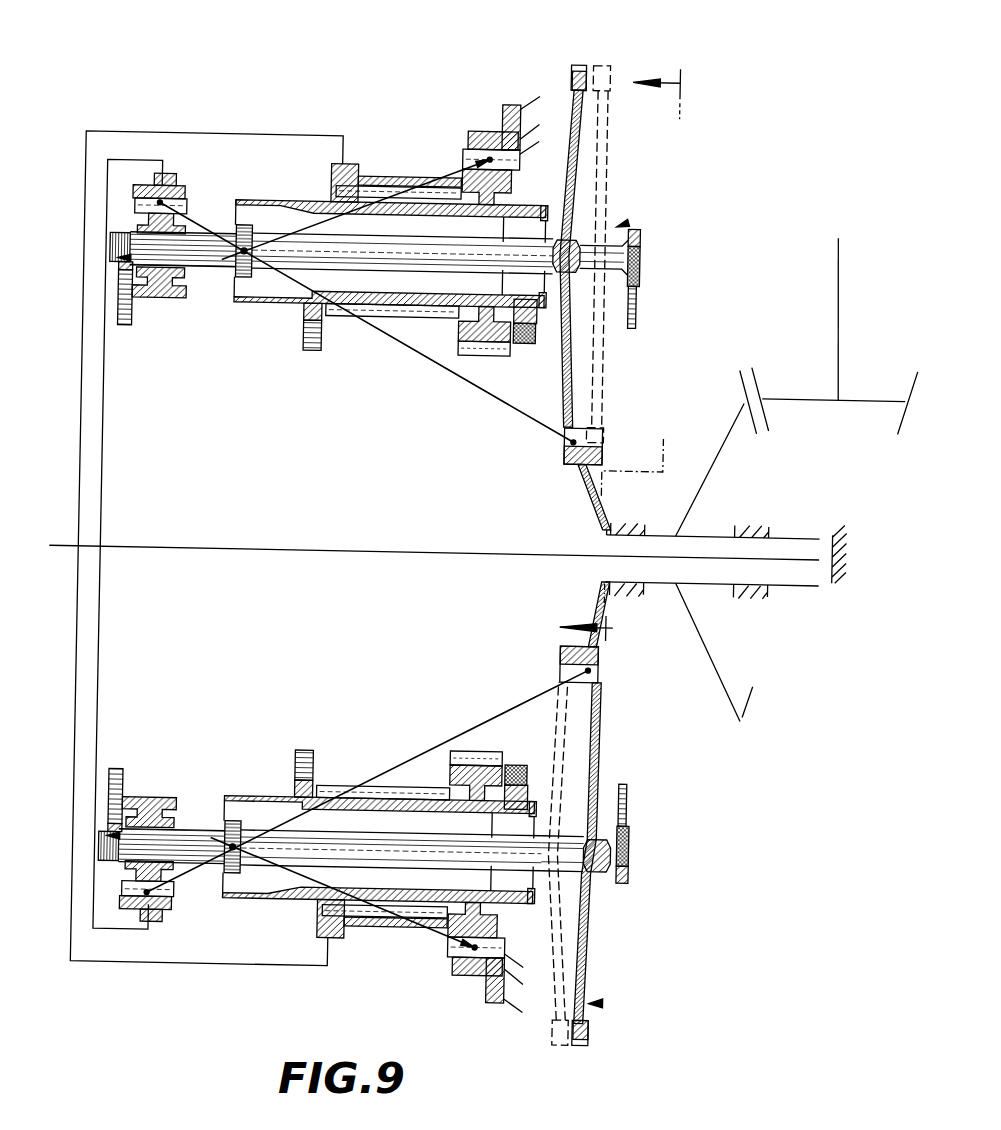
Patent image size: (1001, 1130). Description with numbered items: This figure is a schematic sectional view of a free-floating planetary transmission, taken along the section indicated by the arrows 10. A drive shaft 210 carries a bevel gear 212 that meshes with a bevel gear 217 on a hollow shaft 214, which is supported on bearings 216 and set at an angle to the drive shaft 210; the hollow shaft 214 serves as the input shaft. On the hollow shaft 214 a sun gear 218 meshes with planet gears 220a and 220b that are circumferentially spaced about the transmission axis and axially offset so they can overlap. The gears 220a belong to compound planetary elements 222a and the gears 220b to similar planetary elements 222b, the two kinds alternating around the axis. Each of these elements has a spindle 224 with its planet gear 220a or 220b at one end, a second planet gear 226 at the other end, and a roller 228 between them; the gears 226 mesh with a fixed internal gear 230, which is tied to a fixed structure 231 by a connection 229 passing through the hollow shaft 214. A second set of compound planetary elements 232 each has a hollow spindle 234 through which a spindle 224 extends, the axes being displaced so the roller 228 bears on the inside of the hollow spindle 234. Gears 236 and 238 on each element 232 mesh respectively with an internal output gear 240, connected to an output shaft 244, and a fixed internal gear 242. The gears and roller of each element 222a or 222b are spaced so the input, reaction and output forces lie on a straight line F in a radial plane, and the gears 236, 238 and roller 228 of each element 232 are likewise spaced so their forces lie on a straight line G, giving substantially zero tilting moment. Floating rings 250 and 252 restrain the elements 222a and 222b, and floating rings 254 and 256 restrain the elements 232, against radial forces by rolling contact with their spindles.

The section view direction arrow 10 is at (642, 359).
The drive shaft 210 is at (837, 317).
The bevel gear 212 is at (764, 388).
The hollow shaft 214 is at (674, 540).
The bearings 216 is at (652, 497).
The bevel gear 217 is at (718, 464).
The sun gear 218 is at (590, 500).
The planet gears 220a is at (570, 370).
The planet gears 220b is at (613, 393).
The compound planetary elements 222a is at (627, 218).
The compound planetary elements 222b is at (612, 995).
The spindle 224 is at (219, 280).
The second planet gear 226 is at (192, 299).
The roller 228 is at (255, 224).
The connection 229 is at (263, 556).
The fixed internal gear 230 is at (183, 186).
The fixed structure 231 is at (850, 558).
The compound planetary elements 232 is at (226, 195).
The hollow spindle 234 is at (297, 202).
The planetary gear 236 is at (341, 313).
The gear 238 is at (512, 187).
The internal output gear 240 is at (437, 178).
The fixed internal gear 242 is at (493, 130).
The output shaft 244 is at (70, 540).
The floating ring 250 is at (134, 326).
The floating ring 252 is at (640, 310).
The floating ring 254 is at (302, 352).
The floating ring 256 is at (530, 344).
The straight line F is at (433, 371).
The straight line G is at (336, 214).